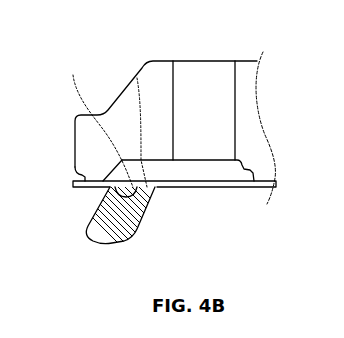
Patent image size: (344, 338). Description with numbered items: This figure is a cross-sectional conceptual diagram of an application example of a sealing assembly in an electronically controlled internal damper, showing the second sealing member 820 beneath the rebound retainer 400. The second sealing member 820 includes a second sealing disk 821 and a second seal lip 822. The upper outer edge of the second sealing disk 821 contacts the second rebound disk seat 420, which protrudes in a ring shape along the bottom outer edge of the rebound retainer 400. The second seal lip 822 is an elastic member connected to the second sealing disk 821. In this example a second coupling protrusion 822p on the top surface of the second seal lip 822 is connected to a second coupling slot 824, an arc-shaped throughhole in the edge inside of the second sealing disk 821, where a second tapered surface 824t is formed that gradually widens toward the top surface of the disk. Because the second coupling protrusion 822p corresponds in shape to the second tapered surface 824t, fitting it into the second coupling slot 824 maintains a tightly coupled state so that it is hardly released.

The rebound retainer 400 is at (80, 140).
The second rebound disk seat 420 is at (78, 175).
The second coupling slot 824 is at (97, 109).
The second tapered surface 824t is at (117, 53).
The second sealing member 820 is at (155, 224).
The second sealing disk 821 is at (220, 187).
The second seal lip 822 is at (121, 220).
The second coupling protrusion 822p is at (132, 191).